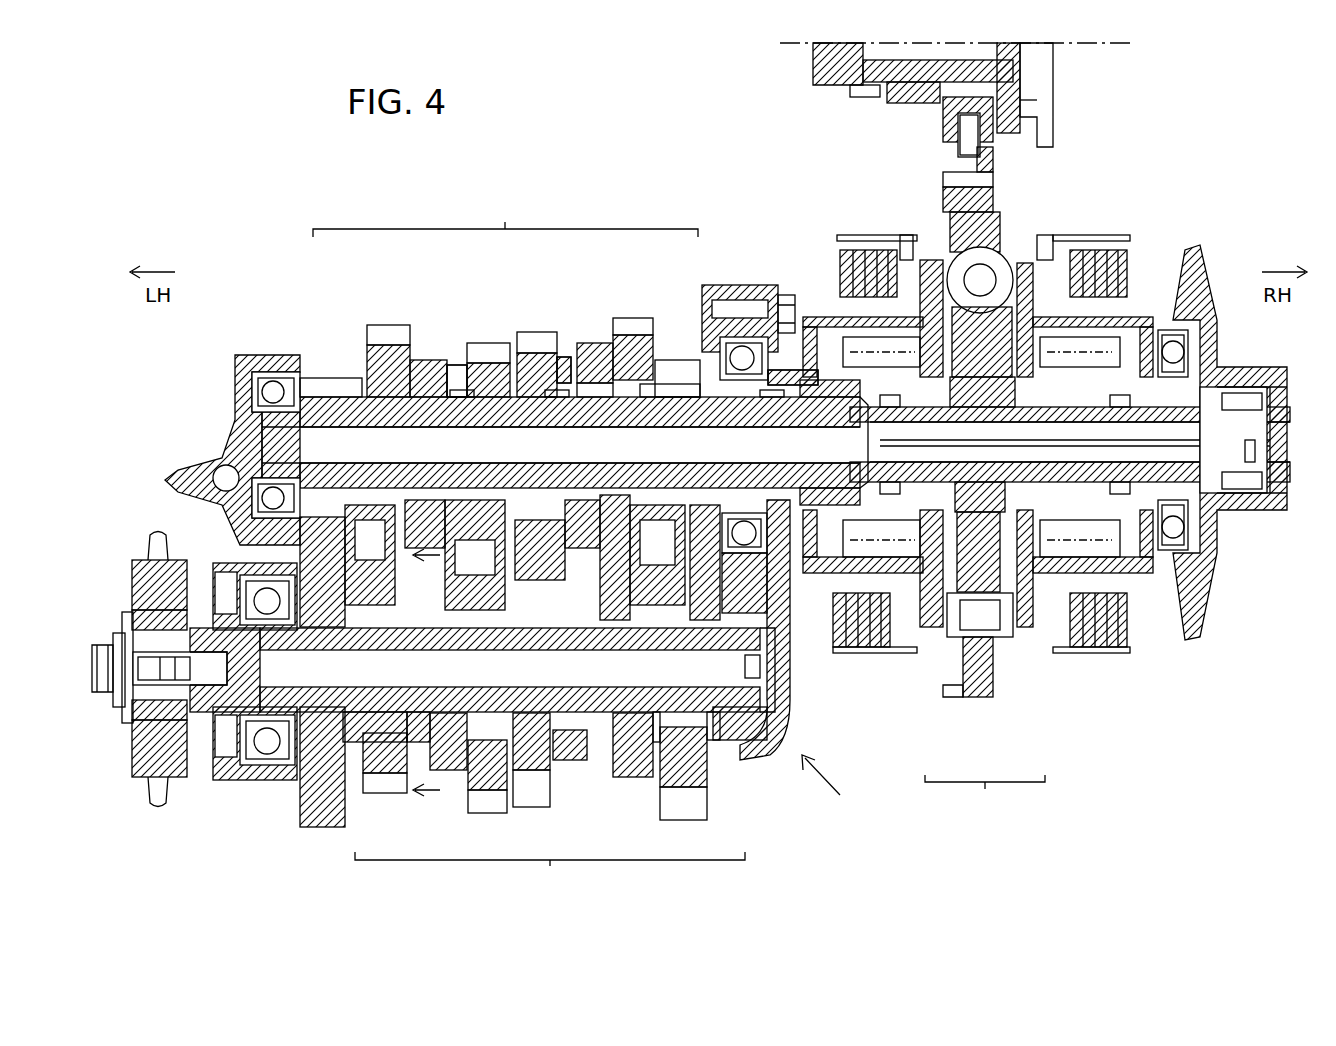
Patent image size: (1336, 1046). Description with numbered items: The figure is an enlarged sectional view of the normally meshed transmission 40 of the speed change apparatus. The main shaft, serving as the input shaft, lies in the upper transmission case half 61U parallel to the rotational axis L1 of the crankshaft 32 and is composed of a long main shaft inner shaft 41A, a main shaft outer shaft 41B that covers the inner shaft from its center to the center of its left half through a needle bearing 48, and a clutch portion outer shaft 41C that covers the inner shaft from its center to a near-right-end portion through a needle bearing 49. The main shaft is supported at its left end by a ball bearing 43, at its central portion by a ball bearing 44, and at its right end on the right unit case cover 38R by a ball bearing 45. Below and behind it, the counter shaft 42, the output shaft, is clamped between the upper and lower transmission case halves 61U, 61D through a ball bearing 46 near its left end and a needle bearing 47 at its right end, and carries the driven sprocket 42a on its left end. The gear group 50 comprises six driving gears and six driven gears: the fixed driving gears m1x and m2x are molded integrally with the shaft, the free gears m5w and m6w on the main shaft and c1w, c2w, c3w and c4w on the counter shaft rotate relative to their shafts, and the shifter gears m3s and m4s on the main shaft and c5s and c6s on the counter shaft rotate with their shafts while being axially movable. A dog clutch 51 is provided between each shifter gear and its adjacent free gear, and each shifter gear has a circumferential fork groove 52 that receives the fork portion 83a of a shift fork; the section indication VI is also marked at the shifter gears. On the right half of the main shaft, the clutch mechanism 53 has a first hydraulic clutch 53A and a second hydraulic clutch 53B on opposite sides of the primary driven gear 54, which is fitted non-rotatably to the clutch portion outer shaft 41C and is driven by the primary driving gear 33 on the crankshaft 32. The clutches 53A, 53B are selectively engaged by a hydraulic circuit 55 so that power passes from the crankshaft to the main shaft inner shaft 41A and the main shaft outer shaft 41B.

The main shaft inner shaft 41A is at (265, 440).
The main shaft outer shaft 41B is at (668, 392).
The clutch portion outer shaft 41C is at (992, 280).
The ball bearing 43 is at (268, 358).
The needle bearing 48 is at (548, 398).
The first-speed driving gear m1x is at (330, 385).
The fifth-speed driving gear m5w is at (390, 332).
The third-speed driving gear m3s is at (485, 350).
The fourth-speed driving gear m4s is at (537, 340).
The sixth-speed driving gear m6w is at (598, 350).
The second-speed driving gear m2x is at (677, 370).
The shift fork 83a is at (430, 362).
The dog clutch 51 is at (445, 362).
The fork groove 52 is at (457, 365).
The ball bearing 44 is at (775, 296).
The upper transmission case half 61U is at (715, 288).
The driven sprocket 42a is at (158, 795).
The counter shaft 42 is at (212, 775).
The ball bearing 46 is at (265, 760).
The first-speed driven gear c1w is at (375, 800).
The fifth-speed driven gear c5s is at (448, 775).
The third-speed driven gear c3w is at (487, 812).
The fourth-speed driven gear c4w is at (540, 808).
The sixth-speed driven gear c6s is at (625, 780).
The second-speed driven gear c2w is at (708, 815).
The gear group 50 is at (529, 543).
The section line VI is at (436, 678).
The lower transmission case half 61D is at (785, 737).
The needle bearing 47 is at (778, 745).
The transmission 40 is at (833, 785).
The needle bearing 49 is at (850, 400).
The primary driving gear 33 is at (990, 165).
The primary driven gear 54 is at (945, 195).
The rotational axis of the crankshaft L1 is at (1085, 45).
The crankshaft 32 is at (1000, 82).
The second hydraulic clutch 53B is at (890, 667).
The first hydraulic clutch 53A is at (1089, 672).
The clutch mechanism 53 is at (985, 790).
The ball bearing 45 is at (1175, 325).
The right unit case cover 38R is at (1225, 340).
The hydraulic circuit 55 is at (1224, 477).